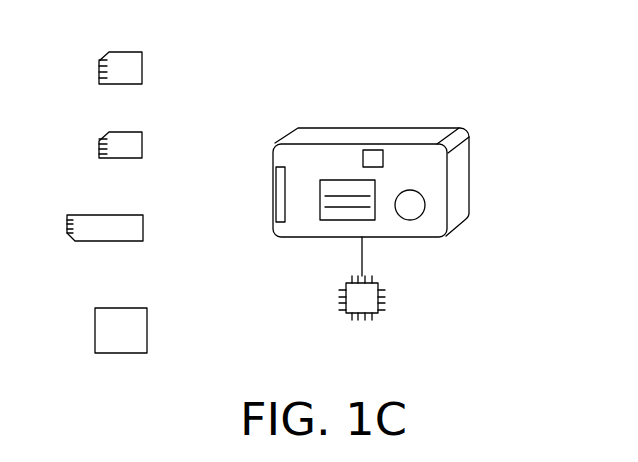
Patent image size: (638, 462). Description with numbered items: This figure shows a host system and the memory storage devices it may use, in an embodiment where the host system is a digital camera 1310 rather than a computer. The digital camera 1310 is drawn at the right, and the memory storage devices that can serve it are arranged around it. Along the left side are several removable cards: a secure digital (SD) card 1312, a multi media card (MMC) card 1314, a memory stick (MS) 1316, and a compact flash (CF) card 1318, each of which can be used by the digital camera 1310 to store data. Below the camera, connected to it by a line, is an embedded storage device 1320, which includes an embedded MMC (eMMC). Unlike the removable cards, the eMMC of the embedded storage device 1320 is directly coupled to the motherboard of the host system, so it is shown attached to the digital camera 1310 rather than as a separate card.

The digital camera 1310 is at (469, 167).
The secure digital (SD) card 1312 is at (143, 60).
The multi media card (MMC) card 1314 is at (143, 136).
The memory stick (MS) 1316 is at (143, 225).
The compact flash (CF) card 1318 is at (147, 323).
The embedded storage device 1320 is at (385, 300).